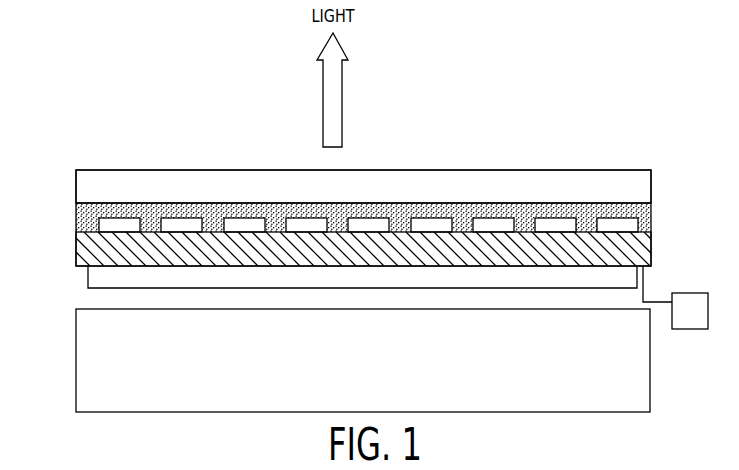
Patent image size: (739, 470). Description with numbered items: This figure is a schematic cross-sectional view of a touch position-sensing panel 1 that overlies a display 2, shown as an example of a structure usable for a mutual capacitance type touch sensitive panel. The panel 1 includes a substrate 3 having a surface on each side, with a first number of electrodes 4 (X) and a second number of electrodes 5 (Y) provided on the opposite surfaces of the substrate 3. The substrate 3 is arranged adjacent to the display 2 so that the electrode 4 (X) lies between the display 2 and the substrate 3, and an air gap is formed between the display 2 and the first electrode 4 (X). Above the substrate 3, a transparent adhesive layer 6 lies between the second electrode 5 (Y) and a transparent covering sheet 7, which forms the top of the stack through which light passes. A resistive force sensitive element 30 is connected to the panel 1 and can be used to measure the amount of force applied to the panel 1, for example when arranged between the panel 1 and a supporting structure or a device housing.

The touch position-sensing panel 1 is at (665, 166).
The display 2 is at (637, 362).
The substrate 3 is at (83, 254).
The first electrodes (X) 4 is at (92, 270).
The second electrodes (Y) 5 is at (107, 224).
The transparent adhesive layer 6 is at (78, 209).
The transparent covering sheet 7 is at (545, 181).
The resistive force sensitive element 30 is at (680, 323).